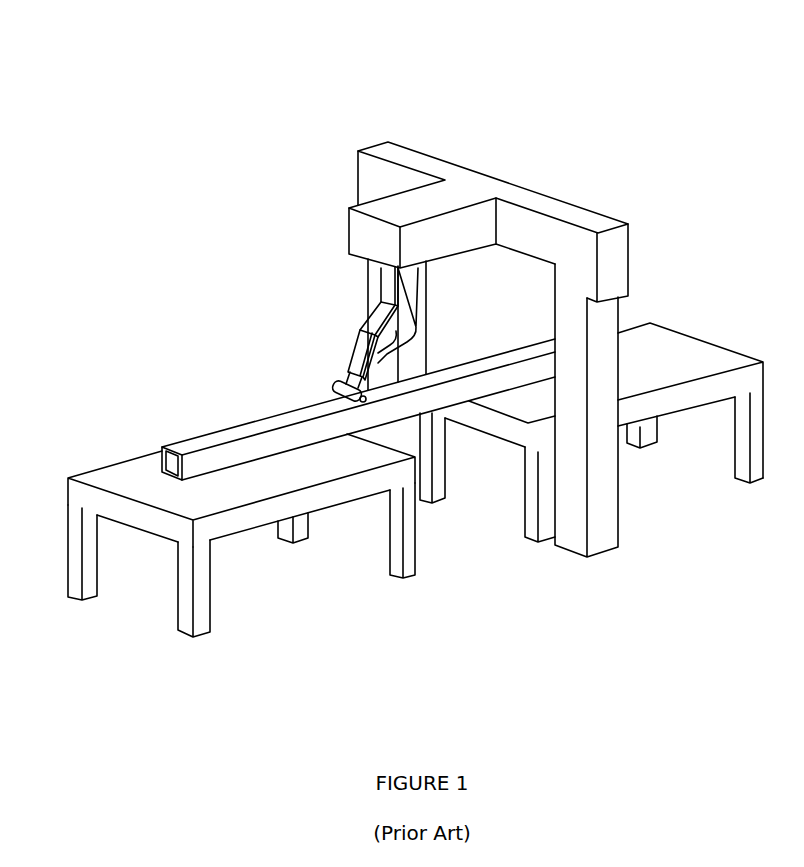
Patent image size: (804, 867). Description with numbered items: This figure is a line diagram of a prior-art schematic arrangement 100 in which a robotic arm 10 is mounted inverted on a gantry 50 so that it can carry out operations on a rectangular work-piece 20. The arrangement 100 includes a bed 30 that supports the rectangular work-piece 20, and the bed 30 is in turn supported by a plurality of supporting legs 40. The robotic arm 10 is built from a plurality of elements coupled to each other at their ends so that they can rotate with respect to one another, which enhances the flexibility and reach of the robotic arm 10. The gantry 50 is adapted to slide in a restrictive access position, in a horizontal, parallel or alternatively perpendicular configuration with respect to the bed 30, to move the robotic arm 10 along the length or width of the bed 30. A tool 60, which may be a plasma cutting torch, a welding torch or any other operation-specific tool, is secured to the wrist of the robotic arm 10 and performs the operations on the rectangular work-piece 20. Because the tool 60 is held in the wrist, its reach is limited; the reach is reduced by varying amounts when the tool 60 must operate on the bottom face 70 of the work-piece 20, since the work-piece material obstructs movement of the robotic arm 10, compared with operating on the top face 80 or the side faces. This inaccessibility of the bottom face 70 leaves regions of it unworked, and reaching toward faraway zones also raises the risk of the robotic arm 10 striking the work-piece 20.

The prior-art schematic arrangement 100 is at (582, 108).
The gantry 50 is at (352, 178).
The robotic arm 10 is at (360, 322).
The tool 60 is at (343, 378).
The top face 80 is at (255, 427).
The rectangular work-piece 20 is at (277, 521).
The bed 30 is at (245, 513).
The supporting legs 40 is at (410, 535).
The bottom face 70 is at (445, 480).